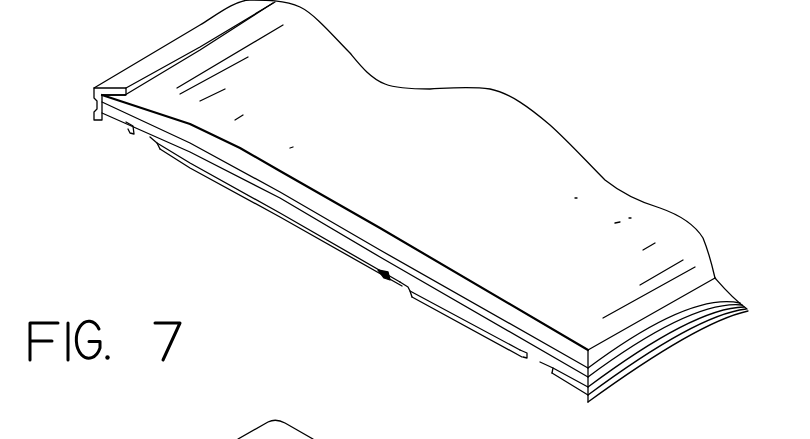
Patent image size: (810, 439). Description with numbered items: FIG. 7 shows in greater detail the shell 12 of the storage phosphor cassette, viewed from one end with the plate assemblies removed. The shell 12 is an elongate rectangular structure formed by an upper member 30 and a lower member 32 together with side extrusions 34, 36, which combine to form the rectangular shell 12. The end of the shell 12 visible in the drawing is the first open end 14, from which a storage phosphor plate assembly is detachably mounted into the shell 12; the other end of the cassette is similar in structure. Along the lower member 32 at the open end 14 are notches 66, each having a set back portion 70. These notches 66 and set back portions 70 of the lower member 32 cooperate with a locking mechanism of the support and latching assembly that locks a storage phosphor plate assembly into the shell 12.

The shell 12 is at (401, 218).
The first open end 14 is at (336, 256).
The upper member 30 is at (381, 82).
The lower member 32 is at (575, 388).
The side extrusion 34 is at (677, 350).
The side extrusion 36 is at (117, 73).
The notches 66 is at (145, 135).
The set back portions 70 is at (378, 272).